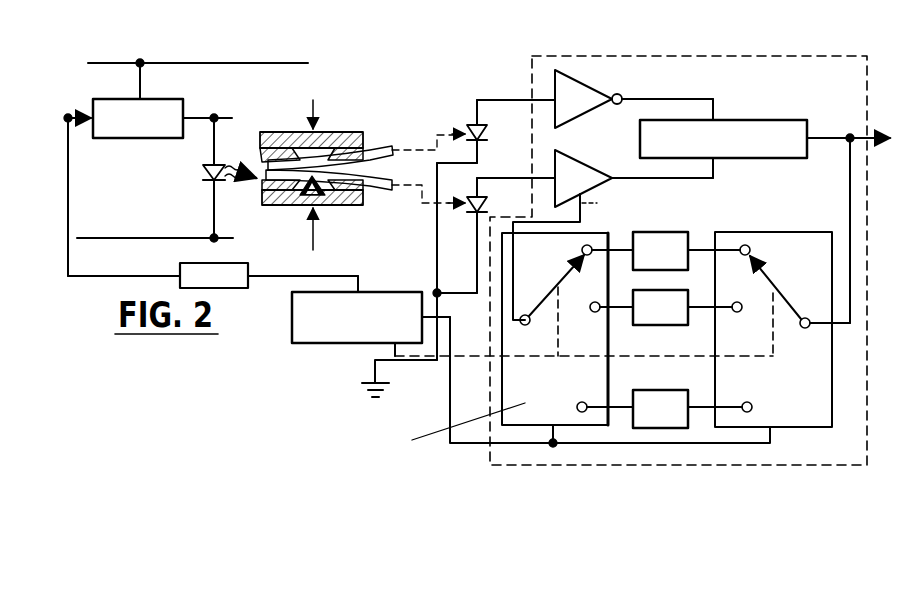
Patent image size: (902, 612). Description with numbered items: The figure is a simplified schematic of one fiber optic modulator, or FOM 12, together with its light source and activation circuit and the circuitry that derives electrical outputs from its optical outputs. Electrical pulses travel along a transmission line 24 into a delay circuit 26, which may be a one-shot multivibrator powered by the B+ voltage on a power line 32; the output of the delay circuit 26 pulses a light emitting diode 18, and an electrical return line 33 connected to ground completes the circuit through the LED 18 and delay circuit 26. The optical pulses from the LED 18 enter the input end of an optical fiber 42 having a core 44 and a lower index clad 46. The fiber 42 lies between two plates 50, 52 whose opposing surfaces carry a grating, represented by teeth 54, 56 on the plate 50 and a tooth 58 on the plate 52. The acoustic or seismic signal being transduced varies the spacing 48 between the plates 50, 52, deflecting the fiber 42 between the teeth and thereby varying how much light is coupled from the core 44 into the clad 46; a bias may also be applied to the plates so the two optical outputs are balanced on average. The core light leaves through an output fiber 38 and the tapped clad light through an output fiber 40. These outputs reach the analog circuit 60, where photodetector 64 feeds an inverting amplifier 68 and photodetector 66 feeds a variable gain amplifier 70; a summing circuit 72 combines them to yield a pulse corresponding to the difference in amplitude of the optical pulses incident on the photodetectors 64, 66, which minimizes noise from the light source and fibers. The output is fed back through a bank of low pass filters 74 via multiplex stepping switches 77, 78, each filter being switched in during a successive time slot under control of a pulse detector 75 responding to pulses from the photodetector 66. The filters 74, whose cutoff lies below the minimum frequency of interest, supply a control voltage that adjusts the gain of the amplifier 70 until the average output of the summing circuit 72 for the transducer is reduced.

The fiber optic modulator (FOM) 12 is at (346, 172).
The light emitting diode 18 is at (205, 172).
The transmission line 24 is at (77, 121).
The delay circuit 26 is at (170, 99).
The power line 32 is at (264, 63).
The electrical return line 33 is at (180, 240).
The output fiber 38 is at (373, 188).
The output fiber 40 is at (390, 163).
The optical fiber 42 is at (253, 192).
The core 44 is at (260, 146).
The clad 46 is at (272, 206).
The spacing 48 is at (426, 173).
The plate 50 is at (364, 158).
The plate 52 is at (350, 206).
The tooth 54 is at (283, 132).
The tooth 56 is at (348, 146).
The tooth 58 is at (301, 206).
The circuit 60 is at (660, 54).
The photodetector 64 is at (470, 125).
The photodetector 66 is at (480, 196).
The inverting amplifier 68 is at (582, 115).
The variable gain amplifier 70 is at (590, 162).
The summing circuit 72 is at (748, 120).
The bank of low pass filters 74 is at (680, 220).
The pulse detector 75 is at (330, 344).
The multiplex stepping switch 77 is at (502, 394).
The multiplex stepping switch 78 is at (795, 428).